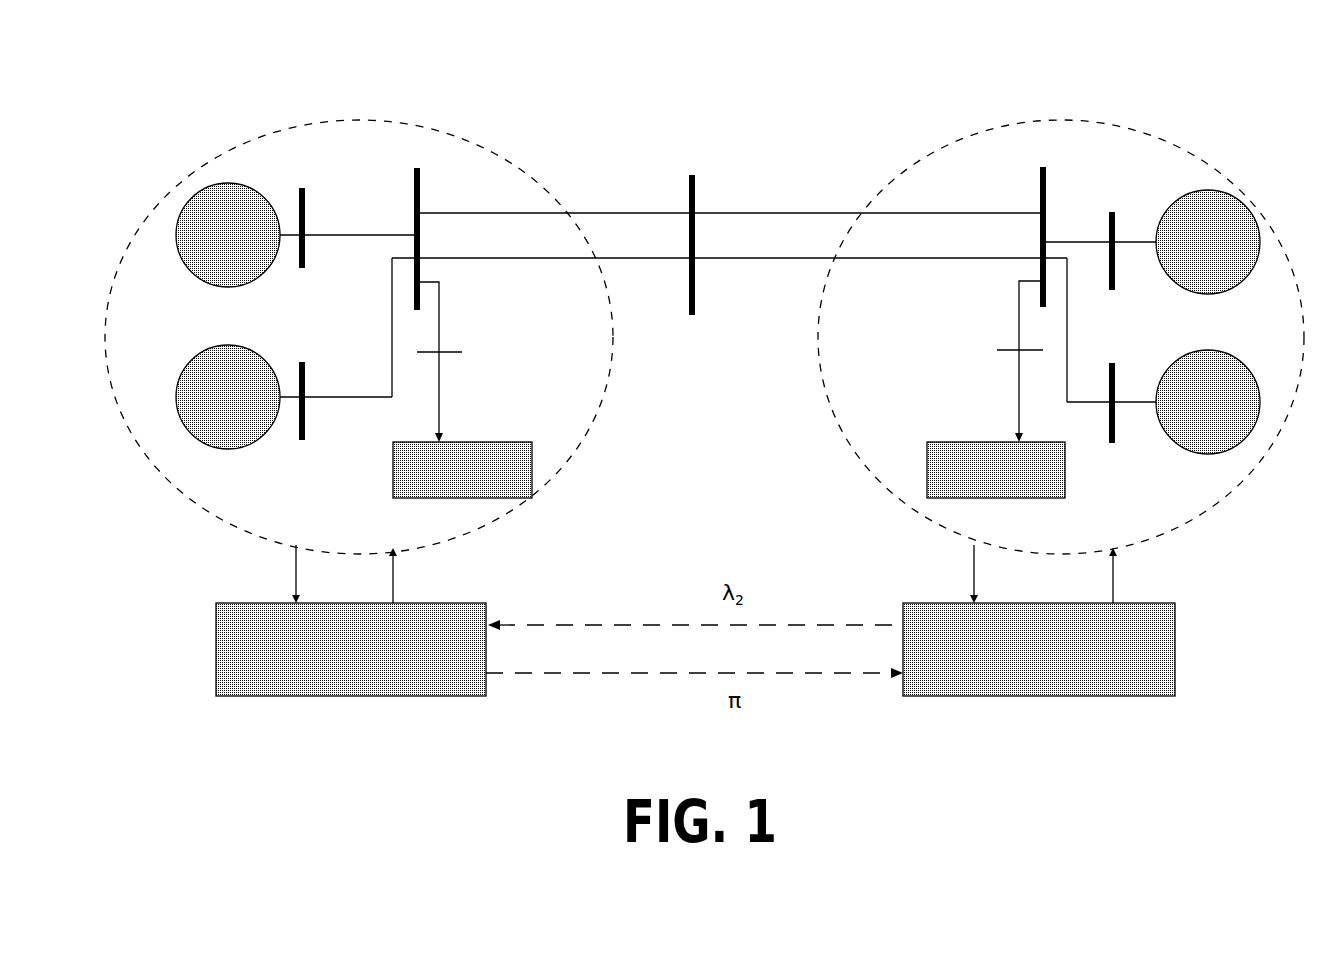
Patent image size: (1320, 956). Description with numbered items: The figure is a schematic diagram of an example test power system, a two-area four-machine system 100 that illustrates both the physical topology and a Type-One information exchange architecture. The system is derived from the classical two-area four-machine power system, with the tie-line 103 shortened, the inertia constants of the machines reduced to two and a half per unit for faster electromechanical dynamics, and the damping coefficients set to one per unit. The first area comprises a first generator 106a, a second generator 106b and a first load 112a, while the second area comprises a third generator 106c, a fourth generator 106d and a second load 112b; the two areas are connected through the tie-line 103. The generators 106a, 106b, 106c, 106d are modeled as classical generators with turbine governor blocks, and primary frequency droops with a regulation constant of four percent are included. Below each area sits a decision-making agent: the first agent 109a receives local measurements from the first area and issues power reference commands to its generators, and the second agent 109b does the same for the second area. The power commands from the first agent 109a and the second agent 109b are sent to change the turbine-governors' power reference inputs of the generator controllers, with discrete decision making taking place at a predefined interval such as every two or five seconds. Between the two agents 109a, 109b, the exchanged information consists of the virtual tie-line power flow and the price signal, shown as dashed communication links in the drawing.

The two-area four-machine system 100 is at (637, 116).
The tie-line 103 is at (744, 186).
The Gen 1 106a is at (226, 166).
The Gen 2 106b is at (226, 468).
The Gen 3 106c is at (1212, 166).
The Gen 4 106d is at (1216, 472).
The Load 1 112a is at (473, 426).
The Load 2 112b is at (965, 426).
The Agent 1 109a is at (382, 698).
The Agent 2 109b is at (985, 698).